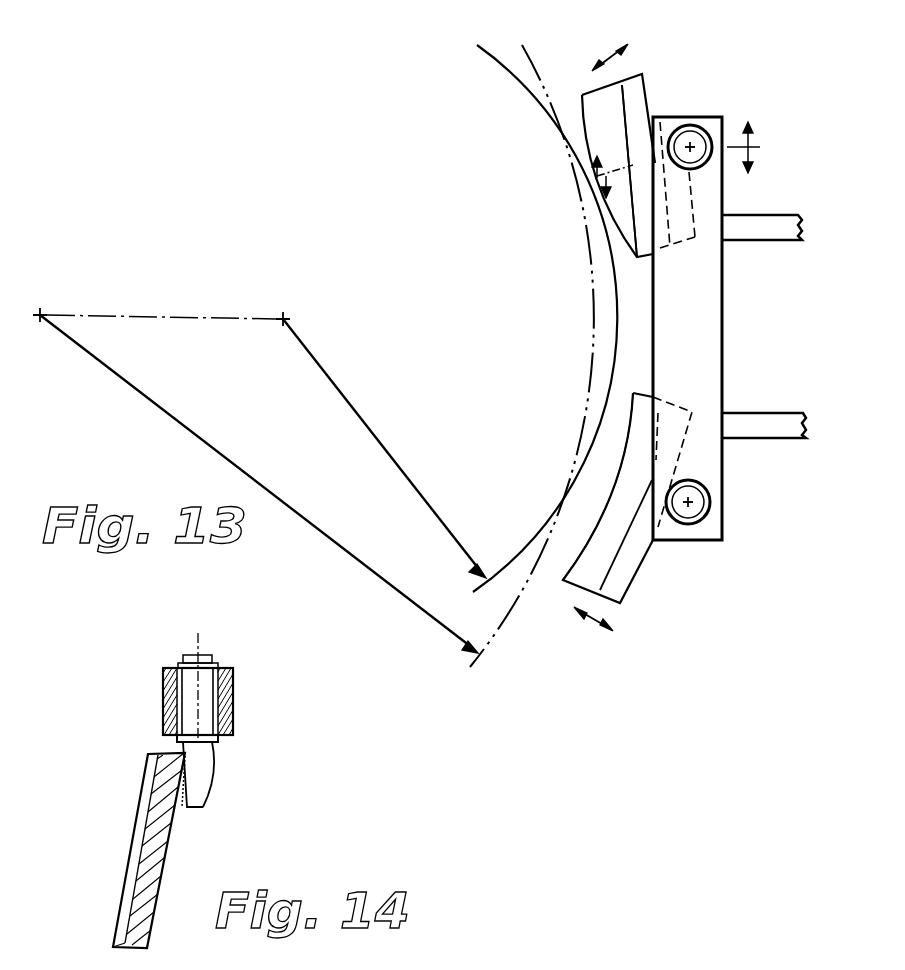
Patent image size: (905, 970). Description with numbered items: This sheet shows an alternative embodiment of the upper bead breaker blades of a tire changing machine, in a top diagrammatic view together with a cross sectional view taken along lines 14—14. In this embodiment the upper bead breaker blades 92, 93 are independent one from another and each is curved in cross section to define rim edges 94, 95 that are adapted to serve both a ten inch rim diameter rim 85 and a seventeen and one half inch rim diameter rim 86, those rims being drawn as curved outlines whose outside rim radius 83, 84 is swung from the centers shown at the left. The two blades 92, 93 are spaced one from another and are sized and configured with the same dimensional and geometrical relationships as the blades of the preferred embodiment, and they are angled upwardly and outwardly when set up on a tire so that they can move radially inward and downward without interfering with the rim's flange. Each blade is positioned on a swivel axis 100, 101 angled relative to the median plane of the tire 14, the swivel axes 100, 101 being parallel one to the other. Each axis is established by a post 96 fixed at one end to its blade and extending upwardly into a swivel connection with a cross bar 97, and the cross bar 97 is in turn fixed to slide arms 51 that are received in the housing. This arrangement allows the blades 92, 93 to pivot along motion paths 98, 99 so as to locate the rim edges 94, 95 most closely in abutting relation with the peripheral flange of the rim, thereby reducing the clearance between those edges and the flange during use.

In FIG. 13, the tire 14 is at (689, 160).
In FIG. 13, the slide arms 51 is at (775, 413).
In FIG. 13, the outside rim radius 83 is at (427, 503).
In FIG. 13, the outside rim radius 84 is at (347, 552).
In FIG. 13, the 10 inch rim diameter rim 85 is at (478, 591).
In FIG. 13, the 17½ inch rim diameter rim 86 is at (490, 642).
In FIG. 13, the upper bead breaker blade 92 is at (625, 110).
In FIG. 14, the upper bead breaker blade 92 is at (147, 850).
In FIG. 13, the upper bead breaker blade 93 is at (610, 550).
In FIG. 13, the rim edge 94 is at (627, 212).
In FIG. 14, the rim edge 94 is at (113, 948).
In FIG. 13, the rim edge 95 is at (604, 503).
In FIG. 13, the post 96 is at (700, 128).
In FIG. 14, the post 96 is at (200, 700).
In FIG. 13, the cross bar 97 is at (710, 345).
In FIG. 14, the cross bar 97 is at (233, 673).
In FIG. 13, the motion path 98 is at (613, 43).
In FIG. 13, the motion path 99 is at (597, 627).
In FIG. 13, the swivel axis 100 is at (692, 146).
In FIG. 14, the swivel axis 100 is at (200, 643).
In FIG. 13, the swivel axis 101 is at (690, 500).